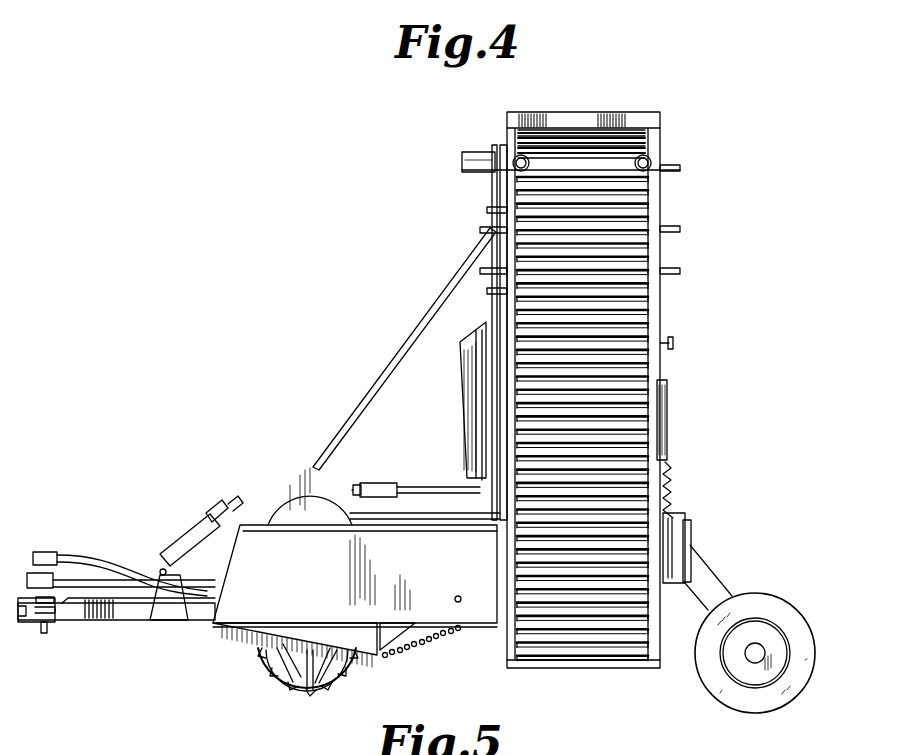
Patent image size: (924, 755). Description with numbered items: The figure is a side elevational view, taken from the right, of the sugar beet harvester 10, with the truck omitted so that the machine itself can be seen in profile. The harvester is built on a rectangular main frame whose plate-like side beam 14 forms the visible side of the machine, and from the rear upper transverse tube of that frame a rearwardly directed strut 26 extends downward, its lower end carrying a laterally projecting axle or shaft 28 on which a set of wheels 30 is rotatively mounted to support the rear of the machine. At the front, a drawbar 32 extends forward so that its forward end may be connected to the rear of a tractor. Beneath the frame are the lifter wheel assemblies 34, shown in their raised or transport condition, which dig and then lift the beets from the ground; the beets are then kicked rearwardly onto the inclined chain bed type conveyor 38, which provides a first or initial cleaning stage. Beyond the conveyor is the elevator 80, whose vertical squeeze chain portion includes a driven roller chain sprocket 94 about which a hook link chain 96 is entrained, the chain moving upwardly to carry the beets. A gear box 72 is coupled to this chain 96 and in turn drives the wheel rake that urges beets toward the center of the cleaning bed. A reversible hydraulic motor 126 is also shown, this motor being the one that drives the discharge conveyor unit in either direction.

The sugar beet harvester 10 is at (358, 283).
The side beam 14 is at (255, 602).
The strut 26 is at (712, 583).
The shaft 28 is at (760, 656).
The wheels 30 is at (813, 642).
The drawbar 32 is at (98, 620).
The lifter wheel assembly 34 is at (277, 674).
The inclined chain bed type conveyor 38 is at (428, 645).
The gear box 72 is at (468, 401).
The elevator 80 is at (573, 680).
The driven roller chain sprocket 94 is at (508, 140).
The hook link chain 96 is at (597, 173).
The reversible hydraulic motor 126 is at (462, 166).